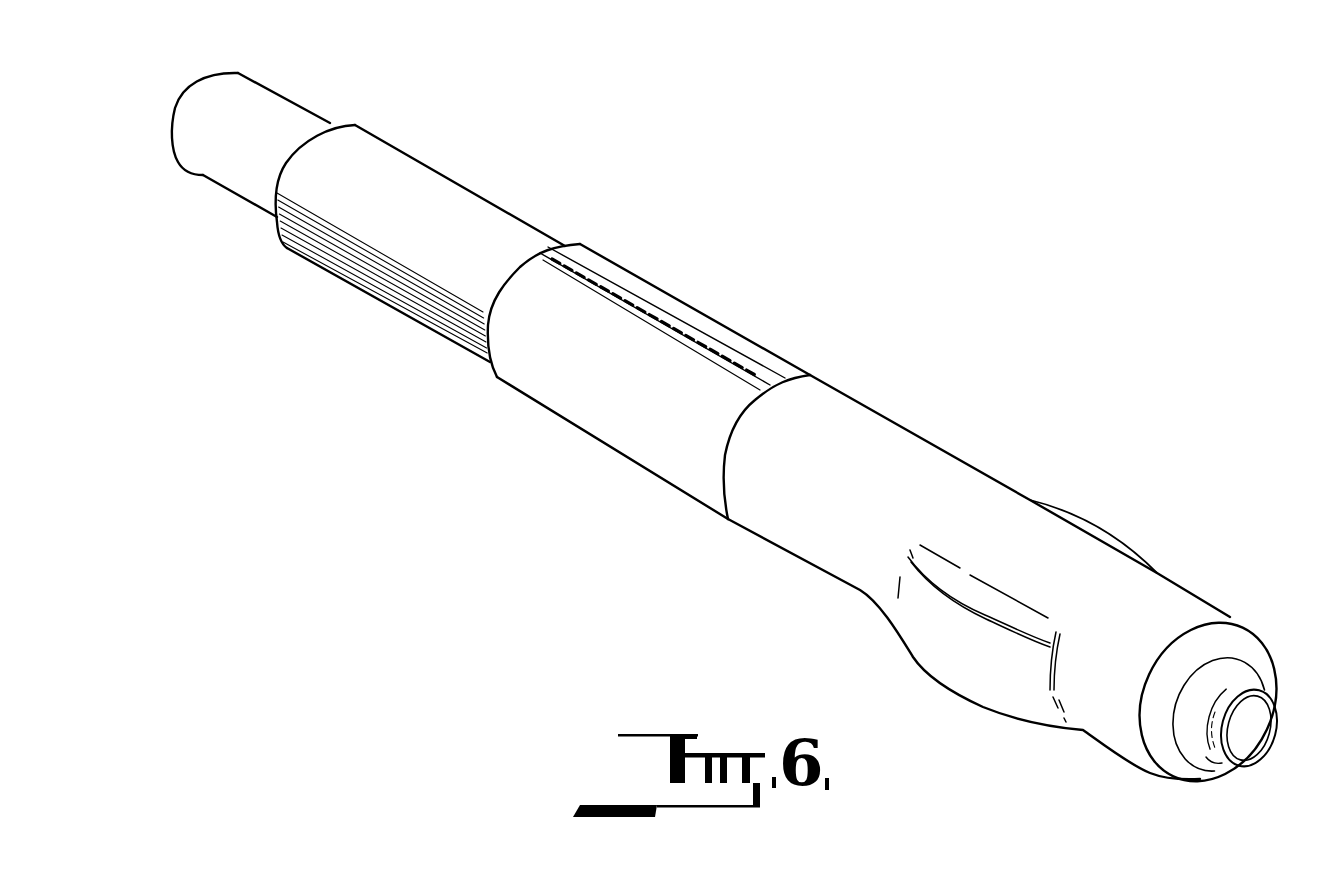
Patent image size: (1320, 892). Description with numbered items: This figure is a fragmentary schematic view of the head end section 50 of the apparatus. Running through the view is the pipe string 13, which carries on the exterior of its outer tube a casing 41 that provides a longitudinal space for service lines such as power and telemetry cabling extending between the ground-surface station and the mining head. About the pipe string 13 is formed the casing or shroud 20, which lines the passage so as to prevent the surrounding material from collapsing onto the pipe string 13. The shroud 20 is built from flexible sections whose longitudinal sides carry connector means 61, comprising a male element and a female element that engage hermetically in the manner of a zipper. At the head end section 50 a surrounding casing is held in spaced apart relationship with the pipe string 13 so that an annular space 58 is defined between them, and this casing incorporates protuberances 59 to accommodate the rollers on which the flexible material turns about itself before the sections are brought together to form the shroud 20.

The pipe string 13 is at (279, 115).
The casing 41 is at (462, 198).
The shroud 20 is at (652, 287).
The connector means 61 is at (715, 345).
The annular space 58 is at (878, 415).
The protuberances 59 is at (1082, 520).
The head end section 50 is at (1185, 617).